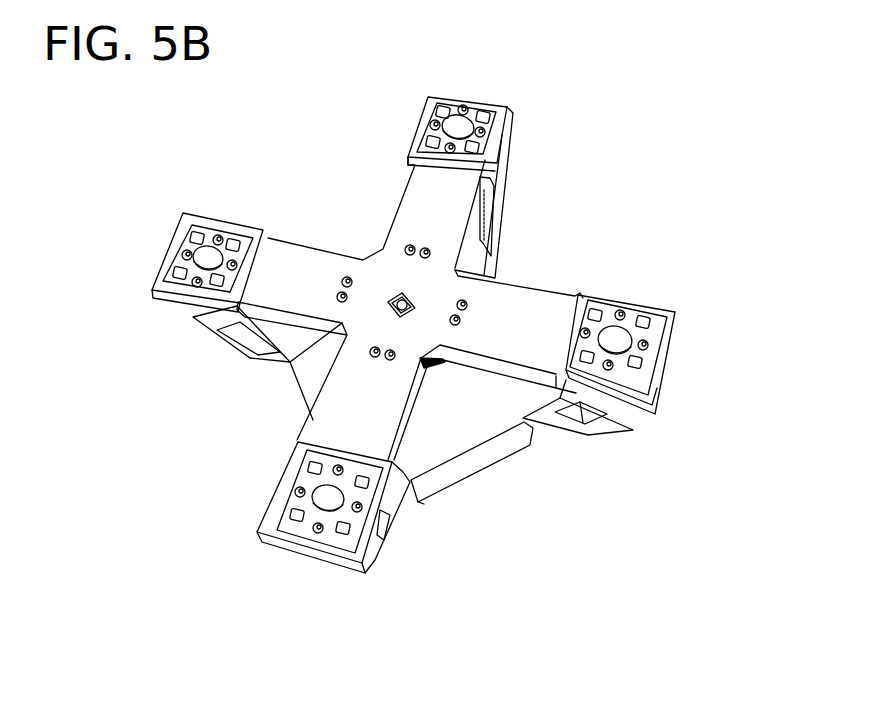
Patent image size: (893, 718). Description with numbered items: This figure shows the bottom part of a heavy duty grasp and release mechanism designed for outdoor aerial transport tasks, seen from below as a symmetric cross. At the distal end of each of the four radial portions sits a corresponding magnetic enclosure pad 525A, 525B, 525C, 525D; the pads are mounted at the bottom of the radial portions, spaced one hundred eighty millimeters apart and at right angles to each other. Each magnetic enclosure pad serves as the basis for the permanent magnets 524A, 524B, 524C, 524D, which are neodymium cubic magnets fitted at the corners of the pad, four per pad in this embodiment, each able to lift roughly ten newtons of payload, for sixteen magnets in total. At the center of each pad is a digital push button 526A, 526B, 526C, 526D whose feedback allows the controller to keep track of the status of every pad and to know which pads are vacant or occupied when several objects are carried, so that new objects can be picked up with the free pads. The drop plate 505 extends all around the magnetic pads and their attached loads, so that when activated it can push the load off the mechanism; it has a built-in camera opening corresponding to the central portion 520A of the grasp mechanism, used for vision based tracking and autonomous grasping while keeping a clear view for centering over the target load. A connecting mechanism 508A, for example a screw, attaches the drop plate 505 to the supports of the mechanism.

The drop plate 505 is at (387, 405).
The connecting mechanism 508A is at (466, 304).
The central portion 520A is at (408, 296).
The permanent magnet 524A is at (486, 112).
The permanent magnet 524B is at (645, 320).
The permanent magnet 524C is at (349, 527).
The permanent magnet 524D is at (180, 275).
The magnetic enclosure pad 525A is at (488, 157).
The magnetic enclosure pad 525B is at (655, 356).
The magnetic enclosure pad 525C is at (336, 538).
The magnetic enclosure pad 525D is at (177, 260).
The digital push button 526A is at (455, 127).
The digital push button 526B is at (617, 342).
The digital push button 526C is at (328, 497).
The digital push button 526D is at (210, 257).